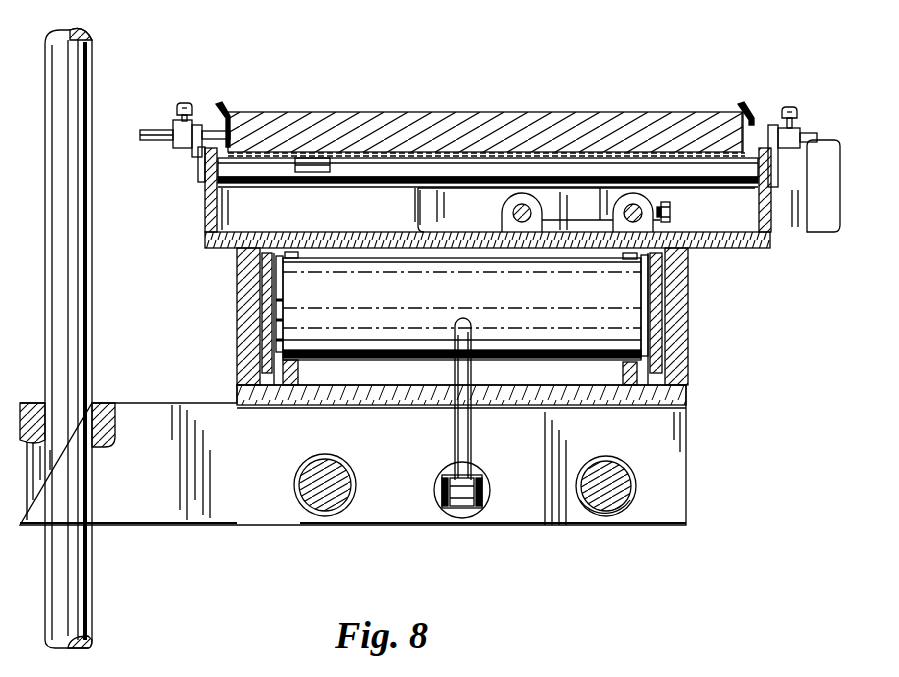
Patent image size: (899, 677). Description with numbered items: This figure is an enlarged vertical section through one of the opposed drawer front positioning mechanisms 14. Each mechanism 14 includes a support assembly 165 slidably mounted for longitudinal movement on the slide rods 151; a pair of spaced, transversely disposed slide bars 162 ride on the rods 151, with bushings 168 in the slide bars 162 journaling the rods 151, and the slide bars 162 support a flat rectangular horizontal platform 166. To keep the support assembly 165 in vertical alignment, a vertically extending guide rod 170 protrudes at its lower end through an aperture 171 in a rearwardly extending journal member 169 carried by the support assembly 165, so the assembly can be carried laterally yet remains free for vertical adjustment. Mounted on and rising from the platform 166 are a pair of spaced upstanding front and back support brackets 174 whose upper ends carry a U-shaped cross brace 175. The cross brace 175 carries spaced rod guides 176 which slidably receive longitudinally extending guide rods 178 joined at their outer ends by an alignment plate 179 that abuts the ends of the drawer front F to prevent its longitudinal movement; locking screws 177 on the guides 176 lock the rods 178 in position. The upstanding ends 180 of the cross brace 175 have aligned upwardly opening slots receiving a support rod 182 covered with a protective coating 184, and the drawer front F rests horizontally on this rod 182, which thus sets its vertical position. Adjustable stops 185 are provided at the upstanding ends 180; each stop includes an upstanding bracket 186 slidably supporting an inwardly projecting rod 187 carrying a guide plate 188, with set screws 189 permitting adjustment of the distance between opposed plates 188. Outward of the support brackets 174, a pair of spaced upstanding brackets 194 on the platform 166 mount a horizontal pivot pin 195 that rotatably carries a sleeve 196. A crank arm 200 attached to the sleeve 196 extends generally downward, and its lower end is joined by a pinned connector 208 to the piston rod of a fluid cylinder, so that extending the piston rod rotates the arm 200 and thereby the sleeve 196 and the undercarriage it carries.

The drawer front positioning mechanism 14 is at (430, 529).
The slide rods 151 is at (345, 482).
The slide bars 162 is at (535, 518).
The support assembly 165 is at (690, 433).
The platform 166 is at (683, 395).
The bushings 168 is at (605, 518).
The journal member 169 is at (204, 526).
The guide rod 170 is at (88, 314).
The aperture 171 is at (90, 406).
The support brackets 174 is at (240, 324).
The cross brace 175 is at (762, 250).
The rod guides 176 is at (545, 205).
The locking screws 177 is at (670, 207).
The guide rods 178 is at (514, 211).
The alignment plate 179 is at (817, 137).
The upstanding ends 180 is at (210, 217).
The support rod 182 is at (306, 185).
The protective coating 184 is at (370, 185).
The stop 185 is at (751, 117).
The upstanding bracket 186 is at (196, 160).
The rod 187 is at (158, 137).
The guide plate 188 is at (222, 112).
The set screws 189 is at (180, 104).
The brackets 194 is at (263, 312).
The pivot pin 195 is at (280, 318).
The sleeve 196 is at (362, 340).
The crank arm 200 is at (460, 437).
The pinned connector 208 is at (482, 477).
The drawer front F is at (398, 111).